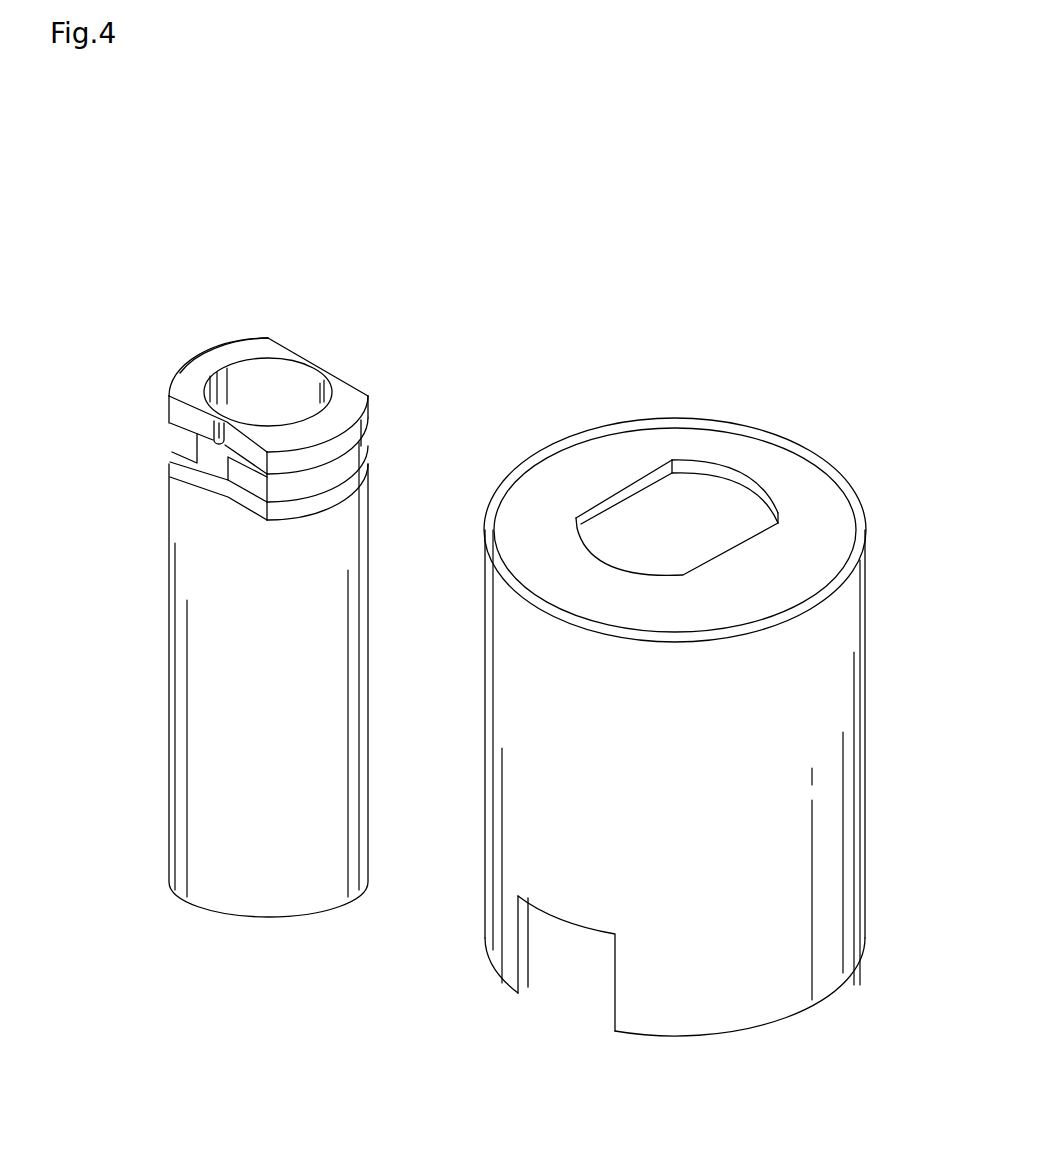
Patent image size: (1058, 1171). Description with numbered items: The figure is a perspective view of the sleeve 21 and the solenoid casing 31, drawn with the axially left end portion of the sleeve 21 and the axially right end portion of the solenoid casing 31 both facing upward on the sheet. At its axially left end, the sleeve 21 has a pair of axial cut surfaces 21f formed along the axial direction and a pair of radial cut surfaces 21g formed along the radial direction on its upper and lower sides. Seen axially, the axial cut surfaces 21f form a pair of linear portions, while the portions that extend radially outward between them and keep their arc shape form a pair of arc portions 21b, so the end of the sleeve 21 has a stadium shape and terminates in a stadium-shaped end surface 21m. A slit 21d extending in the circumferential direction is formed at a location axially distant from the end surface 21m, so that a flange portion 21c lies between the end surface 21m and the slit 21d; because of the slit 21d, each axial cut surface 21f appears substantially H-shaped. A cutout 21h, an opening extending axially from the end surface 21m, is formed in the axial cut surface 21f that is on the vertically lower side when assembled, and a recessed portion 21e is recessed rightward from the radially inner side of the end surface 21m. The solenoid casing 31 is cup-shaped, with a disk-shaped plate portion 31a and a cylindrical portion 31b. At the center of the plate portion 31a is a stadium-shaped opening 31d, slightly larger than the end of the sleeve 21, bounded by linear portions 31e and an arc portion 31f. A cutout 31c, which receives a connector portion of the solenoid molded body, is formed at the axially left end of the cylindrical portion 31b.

The sleeve 21 is at (368, 334).
The arc portion 21b is at (180, 373).
The flange portion 21c is at (370, 420).
The slit 21d is at (370, 457).
The recessed portion 21e is at (250, 387).
The axial cut surface 21f is at (190, 360).
The radial cut surface 21g is at (170, 478).
The cutout 21h is at (170, 442).
The end surface 21m is at (347, 387).
The solenoid casing 31 is at (803, 383).
The plate portion 31a is at (627, 437).
The cylindrical portion 31b is at (843, 740).
The cutout 31c is at (615, 1003).
The opening 31d is at (688, 490).
The linear portion 31e is at (605, 497).
The arc portion 31f is at (743, 481).